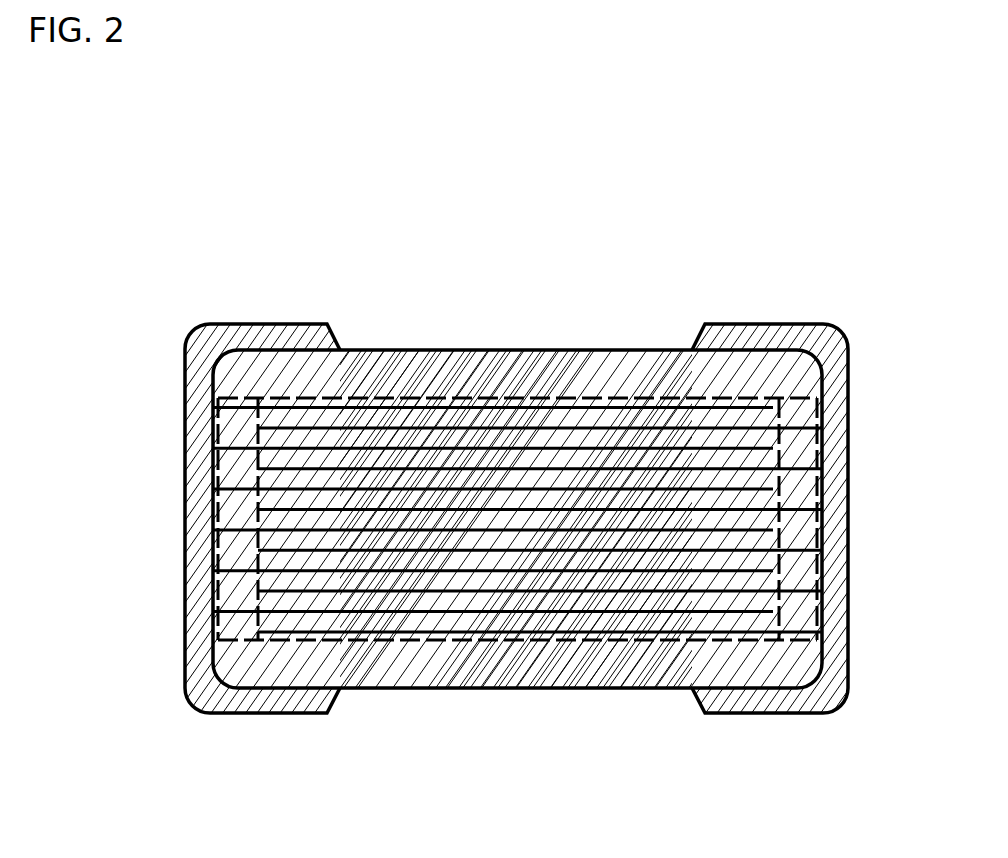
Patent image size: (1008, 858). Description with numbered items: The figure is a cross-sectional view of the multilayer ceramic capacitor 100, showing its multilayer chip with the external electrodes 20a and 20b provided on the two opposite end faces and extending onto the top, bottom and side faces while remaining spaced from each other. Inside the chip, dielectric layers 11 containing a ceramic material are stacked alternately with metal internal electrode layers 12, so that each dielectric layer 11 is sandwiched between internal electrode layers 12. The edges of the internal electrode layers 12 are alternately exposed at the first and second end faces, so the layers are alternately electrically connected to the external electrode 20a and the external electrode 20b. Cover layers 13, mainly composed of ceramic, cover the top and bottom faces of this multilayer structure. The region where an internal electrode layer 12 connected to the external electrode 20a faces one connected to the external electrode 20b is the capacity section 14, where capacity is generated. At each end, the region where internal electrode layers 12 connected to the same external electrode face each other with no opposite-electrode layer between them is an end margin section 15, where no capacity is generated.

The multilayer ceramic capacitor 100 is at (504, 465).
The dielectric layer 11 is at (629, 598).
The internal electrode layer 12 is at (458, 573).
The cover layer 13 is at (410, 367).
The capacity section 14 is at (542, 397).
The end margin section 15 is at (237, 399).
The external electrode 20a is at (210, 323).
The external electrode 20b is at (812, 323).